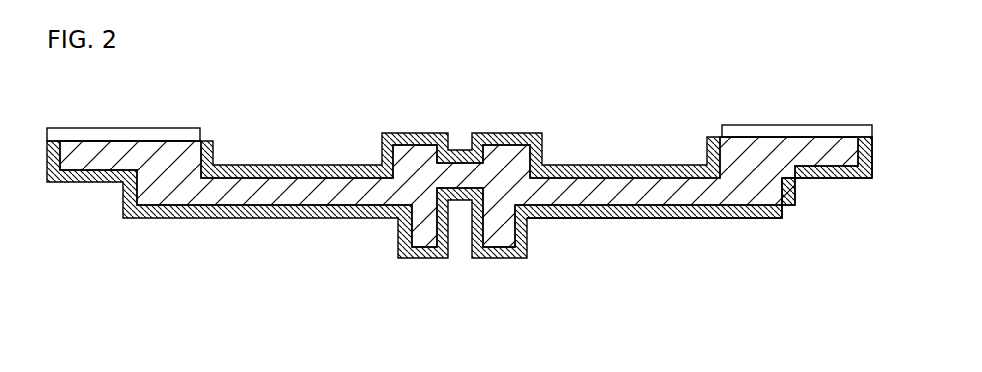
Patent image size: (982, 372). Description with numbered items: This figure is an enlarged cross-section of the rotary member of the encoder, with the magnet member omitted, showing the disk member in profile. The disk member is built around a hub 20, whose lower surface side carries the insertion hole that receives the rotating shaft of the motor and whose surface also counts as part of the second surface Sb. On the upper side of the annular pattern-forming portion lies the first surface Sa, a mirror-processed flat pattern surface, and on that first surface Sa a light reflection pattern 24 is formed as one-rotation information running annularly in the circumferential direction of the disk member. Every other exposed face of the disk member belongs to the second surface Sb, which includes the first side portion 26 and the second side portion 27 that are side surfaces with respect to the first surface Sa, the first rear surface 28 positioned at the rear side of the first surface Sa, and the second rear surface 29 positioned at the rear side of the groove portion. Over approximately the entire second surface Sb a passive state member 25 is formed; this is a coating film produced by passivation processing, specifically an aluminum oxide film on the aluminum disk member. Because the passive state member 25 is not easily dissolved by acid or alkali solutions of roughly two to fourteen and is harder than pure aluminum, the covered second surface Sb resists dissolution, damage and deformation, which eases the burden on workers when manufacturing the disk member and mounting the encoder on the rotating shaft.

The hub 20 is at (445, 266).
The light reflection pattern 24 is at (170, 122).
The passive state member 25 is at (276, 165).
The first surface Sa is at (793, 131).
The second surface Sb is at (902, 276).
The first side portion 26 is at (875, 157).
The second side portion 27 is at (797, 186).
The first rear surface 28 is at (833, 179).
The second rear surface 29 is at (757, 219).